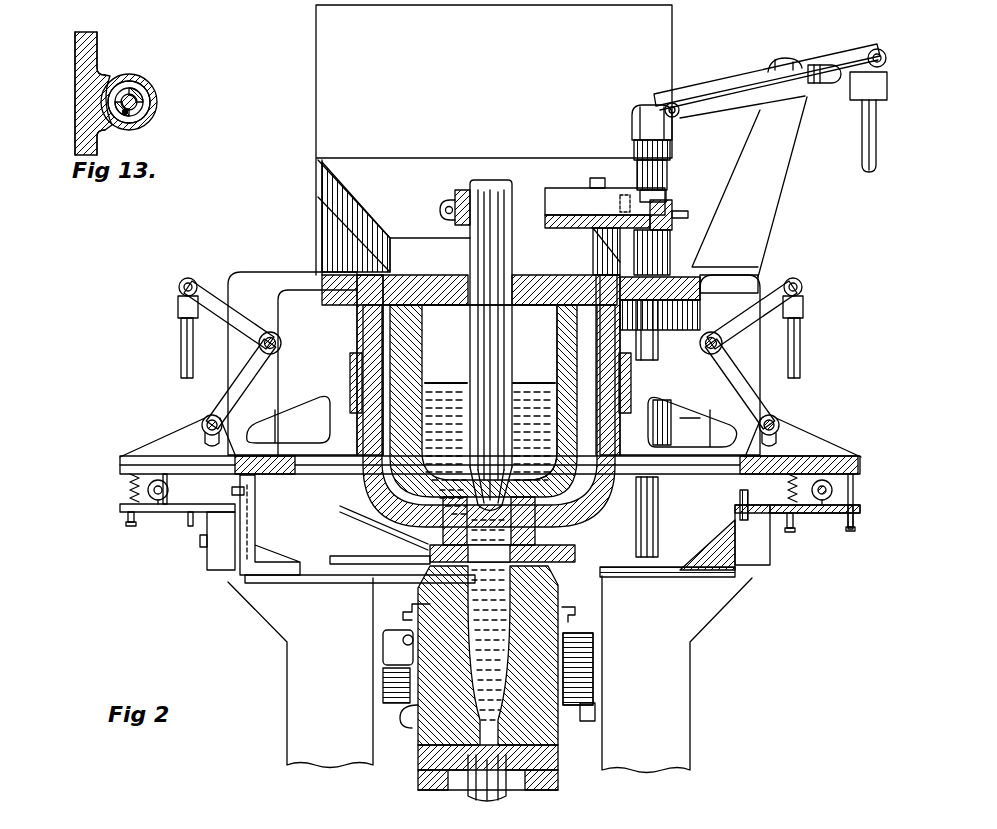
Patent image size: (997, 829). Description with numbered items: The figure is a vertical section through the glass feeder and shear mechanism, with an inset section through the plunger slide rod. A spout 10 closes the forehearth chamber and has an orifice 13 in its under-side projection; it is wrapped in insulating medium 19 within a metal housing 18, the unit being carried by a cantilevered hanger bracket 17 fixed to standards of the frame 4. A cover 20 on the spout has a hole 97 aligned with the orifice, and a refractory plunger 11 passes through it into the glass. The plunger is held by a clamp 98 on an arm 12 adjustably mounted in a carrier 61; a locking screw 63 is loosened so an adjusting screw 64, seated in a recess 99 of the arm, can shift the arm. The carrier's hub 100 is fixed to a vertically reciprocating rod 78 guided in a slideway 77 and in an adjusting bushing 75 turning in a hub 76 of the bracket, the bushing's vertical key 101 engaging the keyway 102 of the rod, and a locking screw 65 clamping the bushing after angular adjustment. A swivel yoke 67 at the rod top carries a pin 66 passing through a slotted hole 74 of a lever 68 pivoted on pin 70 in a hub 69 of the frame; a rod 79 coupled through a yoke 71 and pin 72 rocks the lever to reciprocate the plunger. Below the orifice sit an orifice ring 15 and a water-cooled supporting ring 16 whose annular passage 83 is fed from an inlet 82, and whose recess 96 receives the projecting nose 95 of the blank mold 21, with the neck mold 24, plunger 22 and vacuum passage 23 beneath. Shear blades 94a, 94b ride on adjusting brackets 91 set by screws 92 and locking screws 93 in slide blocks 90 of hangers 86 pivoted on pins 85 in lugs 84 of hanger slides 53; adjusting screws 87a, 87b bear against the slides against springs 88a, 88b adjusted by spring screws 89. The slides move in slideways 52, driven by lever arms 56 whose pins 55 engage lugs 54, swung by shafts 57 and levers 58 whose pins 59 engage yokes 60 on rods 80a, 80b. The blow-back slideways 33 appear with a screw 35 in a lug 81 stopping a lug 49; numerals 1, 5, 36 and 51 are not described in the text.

In FIG. 2, the hopper 1 is at (316, 172).
In FIG. 2, the frame 4 is at (310, 700).
In FIG. 2, the molten material 5 is at (445, 386).
In FIG. 2, the spout 10 is at (420, 326).
In FIG. 2, the refractory plunger 11 is at (495, 185).
In FIG. 2, the arm 12 is at (560, 188).
In FIG. 2, the orifice 13 is at (520, 490).
In FIG. 2, the orifice ring 15 is at (575, 553).
In FIG. 2, the water-cooled supporting ring 16 is at (442, 492).
In FIG. 13, the hanger bracket 17 is at (95, 50).
In FIG. 2, the hanger bracket 17 is at (275, 272).
In FIG. 2, the metal housing 18 is at (560, 360).
In FIG. 2, the insulating medium 19 is at (572, 328).
In FIG. 2, the cover 20 is at (415, 282).
In FIG. 2, the blank mold 21 is at (590, 685).
In FIG. 2, the plunger 22 is at (540, 760).
In FIG. 2, the vacuum passage 23 is at (545, 778).
In FIG. 2, the neck mold 24 is at (418, 760).
In FIG. 2, the slideways 33 is at (400, 615).
In FIG. 2, the screw 35 is at (400, 640).
In FIG. 2, the spring 36 is at (385, 680).
In FIG. 2, the lug 49 is at (402, 720).
In FIG. 2, the nut 51 is at (595, 712).
In FIG. 2, the slideways 52 is at (350, 380).
In FIG. 2, the hanger slides 53 is at (120, 462).
In FIG. 2, the lugs 54 is at (200, 440).
In FIG. 2, the pins 55 is at (200, 425).
In FIG. 2, the lever arms 56 is at (232, 395).
In FIG. 2, the shafts 57 is at (276, 335).
In FIG. 2, the levers 58 is at (230, 310).
In FIG. 2, the pins 59 is at (179, 287).
In FIG. 2, the yokes 60 is at (178, 305).
In FIG. 2, the carrier 61 is at (582, 228).
In FIG. 2, the locking screw 63 is at (596, 178).
In FIG. 2, the adjusting screw 64 is at (672, 210).
In FIG. 2, the locking screw 65 is at (758, 278).
In FIG. 2, the pin 66 is at (676, 118).
In FIG. 2, the swivel yoke 67 is at (634, 118).
In FIG. 2, the lever 68 is at (675, 95).
In FIG. 2, the hub 69 is at (775, 62).
In FIG. 2, the pin 70 is at (835, 84).
In FIG. 2, the yoke 71 is at (887, 80).
In FIG. 2, the pin 72 is at (886, 54).
In FIG. 2, the slotted hole 74 is at (742, 112).
In FIG. 13, the adjusting bushing 75 is at (138, 104).
In FIG. 2, the adjusting bushing 75 is at (700, 283).
In FIG. 13, the hub 76 is at (135, 82).
In FIG. 2, the hub 76 is at (700, 312).
In FIG. 2, the slideway 77 is at (693, 428).
In FIG. 13, the vertically reciprocating rod 78 is at (142, 95).
In FIG. 2, the vertically reciprocating rod 78 is at (636, 520).
In FIG. 2, the rod 79 is at (876, 140).
In FIG. 2, the vertically reciprocating rod 80a is at (800, 358).
In FIG. 2, the vertically reciprocating rod 80b is at (181, 338).
In FIG. 2, the lug 81 is at (392, 657).
In FIG. 2, the inlet 82 is at (345, 506).
In FIG. 2, the annular passage 83 is at (385, 557).
In FIG. 2, the lugs 84 is at (128, 480).
In FIG. 2, the pins 85 is at (158, 500).
In FIG. 2, the hangers 86 is at (165, 504).
In FIG. 2, the adjusting screw 87a is at (855, 515).
In FIG. 2, the adjusting screw 87b is at (190, 526).
In FIG. 2, the spring 88a is at (806, 513).
In FIG. 2, the spring 88b is at (120, 500).
In FIG. 2, the spring screws 89 is at (126, 518).
In FIG. 2, the slide blocks 90 is at (215, 570).
In FIG. 2, the adjusting brackets 91 is at (262, 560).
In FIG. 2, the screws 92 is at (244, 493).
In FIG. 2, the locking screws 93 is at (770, 560).
In FIG. 2, the shear blade 94a is at (622, 577).
In FIG. 2, the shear blade 94b is at (340, 583).
In FIG. 2, the projecting nose 95 is at (462, 585).
In FIG. 2, the recess 96 is at (520, 585).
In FIG. 2, the hole 97 is at (525, 285).
In FIG. 2, the clamp 98 is at (455, 193).
In FIG. 2, the recess 99 is at (620, 205).
In FIG. 2, the hub 100 is at (672, 225).
In FIG. 13, the vertical key 101 is at (128, 115).
In FIG. 2, the keyway 102 is at (718, 238).